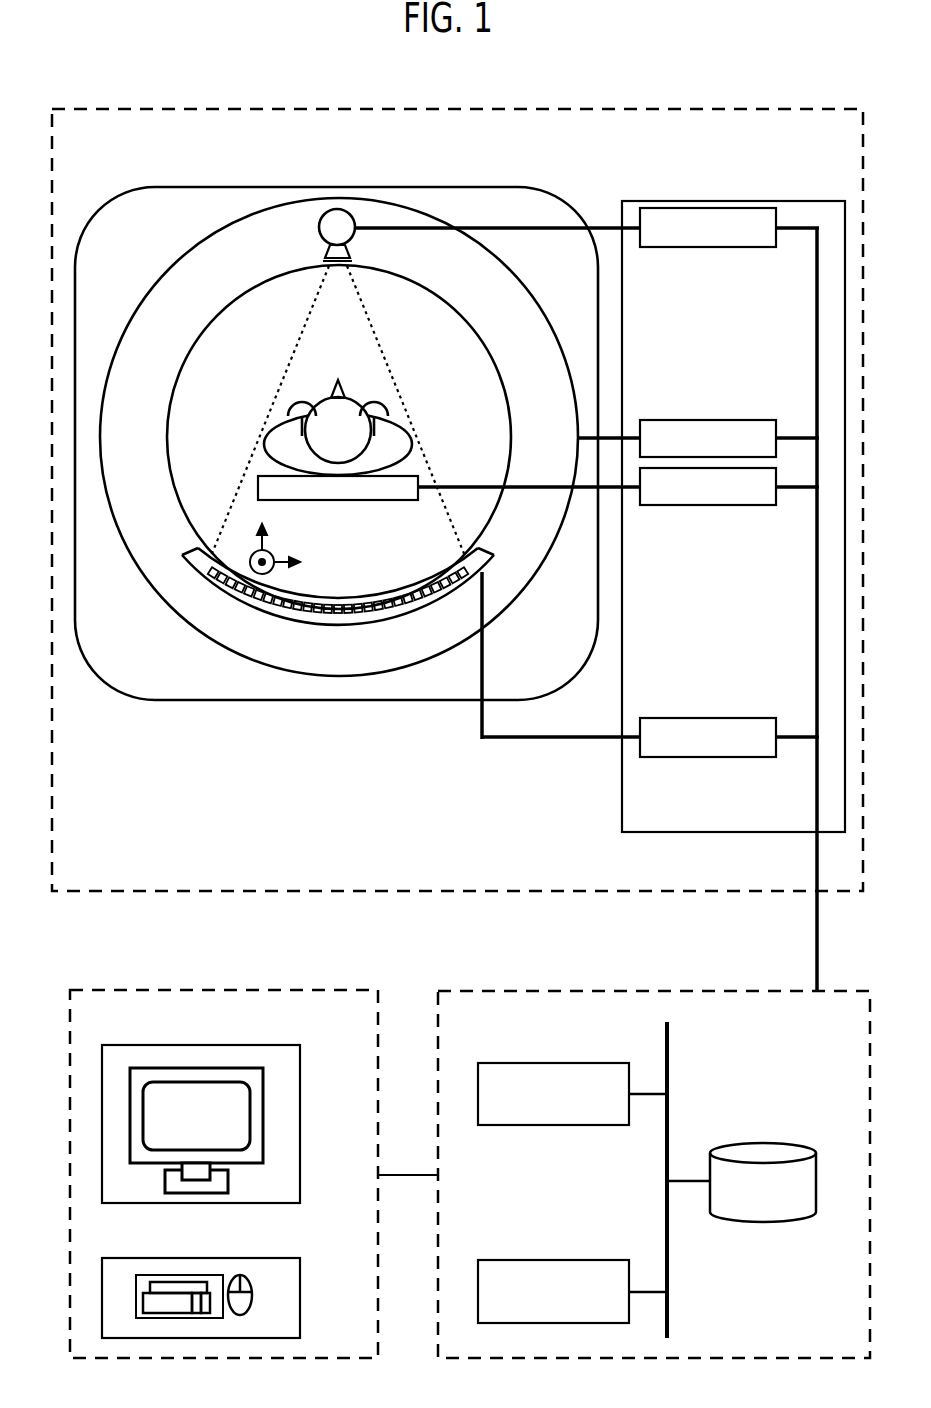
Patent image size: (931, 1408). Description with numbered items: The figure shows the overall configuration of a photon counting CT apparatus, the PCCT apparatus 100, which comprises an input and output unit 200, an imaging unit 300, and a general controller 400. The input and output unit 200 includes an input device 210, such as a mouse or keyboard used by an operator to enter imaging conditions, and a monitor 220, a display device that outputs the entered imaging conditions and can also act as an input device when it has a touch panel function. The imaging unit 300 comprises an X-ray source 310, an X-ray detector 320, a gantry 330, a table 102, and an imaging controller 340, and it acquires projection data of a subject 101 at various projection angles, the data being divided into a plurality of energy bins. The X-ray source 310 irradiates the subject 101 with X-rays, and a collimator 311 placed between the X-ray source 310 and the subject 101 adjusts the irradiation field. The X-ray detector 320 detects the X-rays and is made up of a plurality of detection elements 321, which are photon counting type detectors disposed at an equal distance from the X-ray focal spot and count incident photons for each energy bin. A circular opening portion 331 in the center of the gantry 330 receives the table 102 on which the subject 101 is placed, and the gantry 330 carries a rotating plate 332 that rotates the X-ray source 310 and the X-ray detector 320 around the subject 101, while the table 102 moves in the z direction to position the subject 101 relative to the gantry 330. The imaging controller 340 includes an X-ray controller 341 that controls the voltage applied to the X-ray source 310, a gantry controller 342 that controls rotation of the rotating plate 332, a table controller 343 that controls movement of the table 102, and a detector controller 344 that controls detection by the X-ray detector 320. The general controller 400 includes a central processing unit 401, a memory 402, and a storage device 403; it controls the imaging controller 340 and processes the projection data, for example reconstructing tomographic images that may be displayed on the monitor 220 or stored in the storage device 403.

The PCCT apparatus 100 is at (200, 88).
The subject 101 is at (319, 397).
The table 102 is at (345, 502).
The input and output unit 200 is at (200, 990).
The input device 210 is at (300, 1297).
The monitor 220 is at (300, 1097).
The imaging unit 300 is at (580, 108).
The X-ray source 310 is at (339, 210).
The collimator 311 is at (326, 246).
The X-ray detector 320 is at (312, 585).
The detection element 321 is at (300, 617).
The gantry 330 is at (548, 187).
The opening portion 331 is at (214, 329).
The rotating plate 332 is at (199, 245).
The imaging controller 340 is at (722, 201).
The X-ray controller 341 is at (714, 248).
The gantry controller 342 is at (713, 420).
The table controller 343 is at (710, 505).
The detector controller 344 is at (713, 718).
The general controller 400 is at (606, 991).
The central processing unit 401 is at (536, 1063).
The memory 402 is at (533, 1260).
The storage device 403 is at (738, 1144).